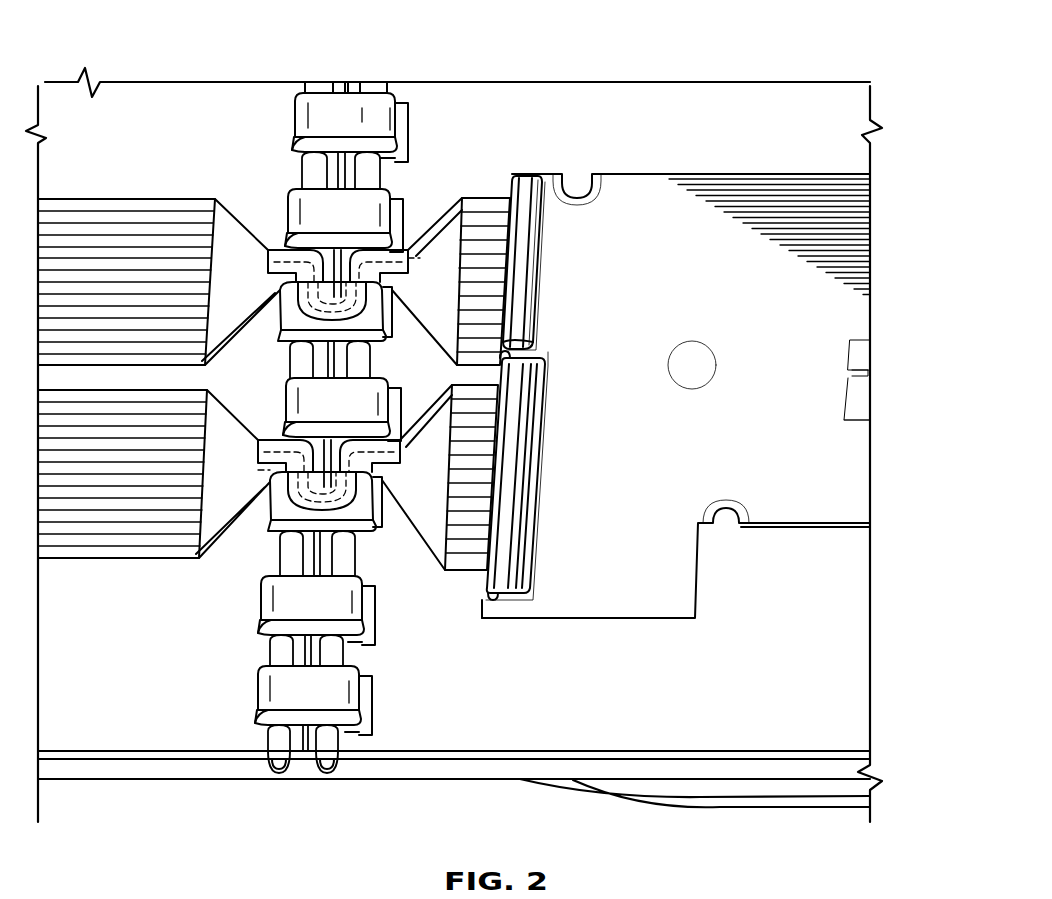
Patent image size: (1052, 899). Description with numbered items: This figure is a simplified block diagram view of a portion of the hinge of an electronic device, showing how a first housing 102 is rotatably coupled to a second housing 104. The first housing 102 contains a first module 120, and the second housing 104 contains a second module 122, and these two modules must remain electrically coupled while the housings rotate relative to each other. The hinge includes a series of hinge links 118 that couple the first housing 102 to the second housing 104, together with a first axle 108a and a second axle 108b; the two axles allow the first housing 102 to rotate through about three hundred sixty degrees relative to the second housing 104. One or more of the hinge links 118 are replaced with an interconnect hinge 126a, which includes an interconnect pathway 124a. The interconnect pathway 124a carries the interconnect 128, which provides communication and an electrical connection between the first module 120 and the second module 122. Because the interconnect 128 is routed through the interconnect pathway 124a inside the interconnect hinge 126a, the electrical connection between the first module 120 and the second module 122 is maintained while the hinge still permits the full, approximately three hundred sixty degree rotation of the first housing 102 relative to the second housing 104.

The first housing 102 is at (205, 90).
The second housing 104 is at (600, 90).
The first axle 108a is at (258, 736).
The second axle 108b is at (350, 774).
The hinge links 118 is at (290, 127).
The first module 120 is at (129, 198).
The second module 122 is at (734, 174).
The interconnect pathway 124a is at (268, 248).
The interconnect hinge 126a is at (394, 314).
The interconnect 128 is at (406, 248).